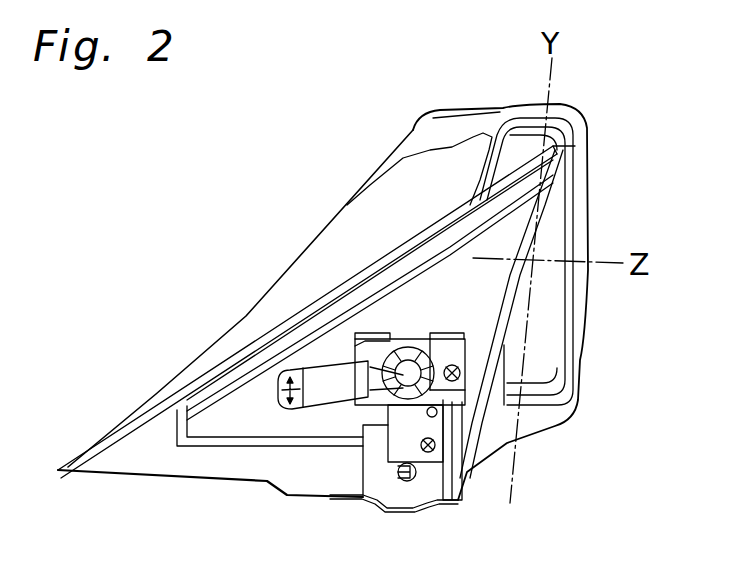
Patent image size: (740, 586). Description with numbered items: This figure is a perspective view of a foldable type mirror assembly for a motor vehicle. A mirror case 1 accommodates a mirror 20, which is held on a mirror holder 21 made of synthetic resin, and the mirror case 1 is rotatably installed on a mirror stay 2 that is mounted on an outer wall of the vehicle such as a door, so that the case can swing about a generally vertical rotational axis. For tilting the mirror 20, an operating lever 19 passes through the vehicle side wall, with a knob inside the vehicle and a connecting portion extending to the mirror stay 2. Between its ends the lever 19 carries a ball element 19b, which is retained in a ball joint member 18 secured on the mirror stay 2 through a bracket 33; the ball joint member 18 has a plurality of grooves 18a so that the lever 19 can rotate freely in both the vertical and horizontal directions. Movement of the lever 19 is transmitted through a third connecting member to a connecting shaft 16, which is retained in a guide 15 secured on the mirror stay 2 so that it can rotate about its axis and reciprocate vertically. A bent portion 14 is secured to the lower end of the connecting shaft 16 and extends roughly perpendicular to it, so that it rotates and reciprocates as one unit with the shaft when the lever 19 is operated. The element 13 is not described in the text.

The mirror case 1 is at (433, 133).
The mirror stay 2 is at (308, 229).
The clip 13 is at (420, 483).
The bent portion 14 is at (397, 470).
The guide 15 is at (427, 426).
The connecting shaft 16 is at (390, 463).
The ball joint member 18 is at (452, 353).
The grooves 18a is at (390, 334).
The operating lever 19 is at (320, 413).
The ball element 19b is at (355, 339).
The mirror 20 is at (550, 249).
The mirror holder 21 is at (558, 119).
The bracket 33 is at (362, 355).